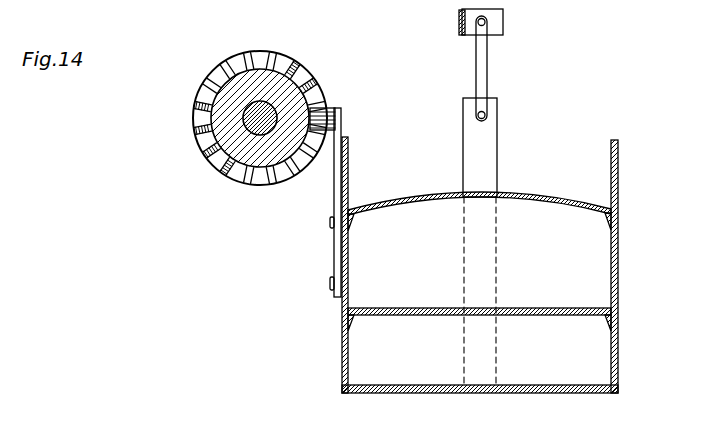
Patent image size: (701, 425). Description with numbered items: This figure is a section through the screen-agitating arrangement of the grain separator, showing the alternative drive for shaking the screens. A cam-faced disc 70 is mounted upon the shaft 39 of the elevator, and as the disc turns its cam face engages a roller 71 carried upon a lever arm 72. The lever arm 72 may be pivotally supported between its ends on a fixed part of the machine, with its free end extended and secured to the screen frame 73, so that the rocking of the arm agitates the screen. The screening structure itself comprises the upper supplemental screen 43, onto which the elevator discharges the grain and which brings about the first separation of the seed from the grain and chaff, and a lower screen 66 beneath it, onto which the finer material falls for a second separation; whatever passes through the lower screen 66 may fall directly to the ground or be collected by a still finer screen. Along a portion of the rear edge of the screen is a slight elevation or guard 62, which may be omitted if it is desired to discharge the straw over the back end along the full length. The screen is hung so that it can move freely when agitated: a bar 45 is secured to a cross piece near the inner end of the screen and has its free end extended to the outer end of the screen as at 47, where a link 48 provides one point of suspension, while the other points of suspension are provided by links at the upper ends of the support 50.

The shaft of the elevator 39 is at (265, 100).
The cam-faced disc 70 is at (308, 75).
The roller 71 is at (334, 108).
The lever arm 72 is at (341, 127).
The guard 62 is at (348, 157).
The screen frame 73 is at (334, 264).
The supplemental screen 43 is at (558, 195).
The lower screen 66 is at (562, 307).
The support 50 is at (491, 152).
The link 48 is at (487, 62).
The extended free end of the bar 47 is at (503, 20).
The bar 45 is at (460, 22).